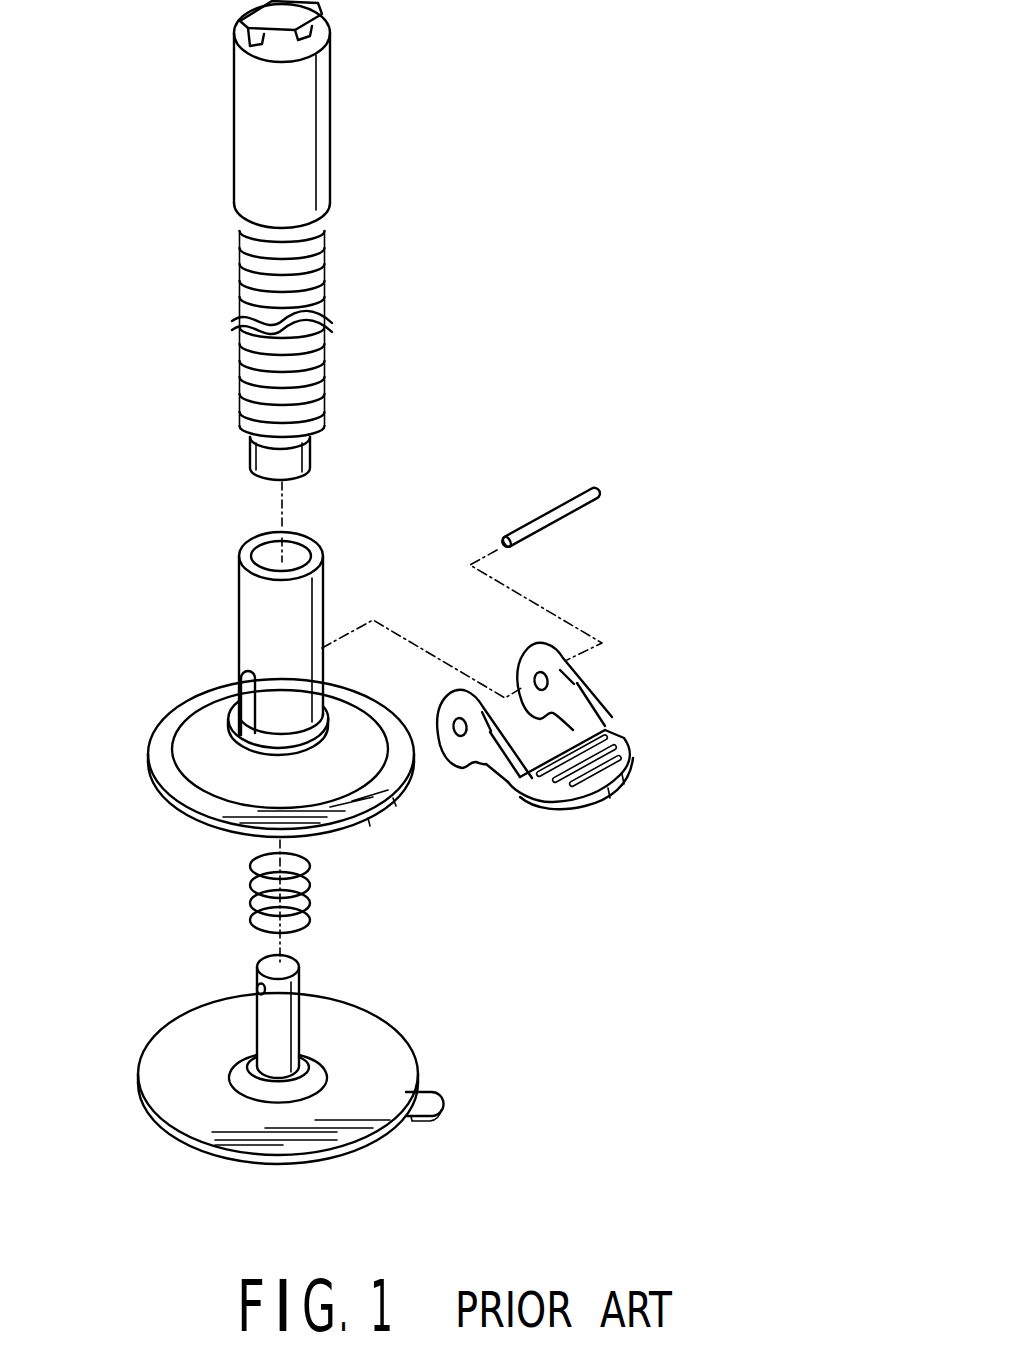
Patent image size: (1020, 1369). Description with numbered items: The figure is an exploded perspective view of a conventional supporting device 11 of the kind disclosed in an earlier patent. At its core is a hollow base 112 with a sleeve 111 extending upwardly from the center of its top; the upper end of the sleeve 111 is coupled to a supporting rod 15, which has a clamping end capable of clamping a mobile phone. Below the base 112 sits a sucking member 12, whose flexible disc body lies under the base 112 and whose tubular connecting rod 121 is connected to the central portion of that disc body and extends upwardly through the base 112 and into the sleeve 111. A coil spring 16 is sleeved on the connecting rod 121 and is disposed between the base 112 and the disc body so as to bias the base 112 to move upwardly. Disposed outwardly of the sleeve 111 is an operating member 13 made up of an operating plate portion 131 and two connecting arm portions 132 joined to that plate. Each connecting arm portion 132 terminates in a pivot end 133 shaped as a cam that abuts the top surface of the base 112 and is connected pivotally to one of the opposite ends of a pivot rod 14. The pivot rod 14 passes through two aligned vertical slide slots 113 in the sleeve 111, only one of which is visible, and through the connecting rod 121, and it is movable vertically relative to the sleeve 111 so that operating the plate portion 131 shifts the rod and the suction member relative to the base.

The conventional supporting device 11 is at (700, 94).
The sucking member 12 is at (340, 1059).
The tubular connecting rod 121 is at (273, 1022).
The operating member 13 is at (625, 783).
The operating plate portion 131 is at (598, 768).
The connecting arm portion 132 is at (578, 705).
The pivot end 133 is at (578, 736).
The pivot rod 14 is at (547, 503).
The supporting rod 15 is at (255, 158).
The coil spring 16 is at (255, 905).
The sleeve 111 is at (253, 593).
The hollow base 112 is at (205, 814).
The vertical slide slot 113 is at (250, 702).